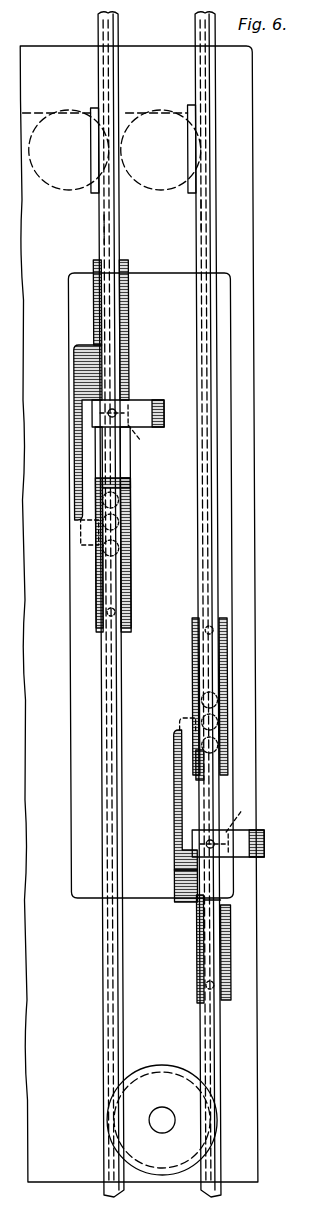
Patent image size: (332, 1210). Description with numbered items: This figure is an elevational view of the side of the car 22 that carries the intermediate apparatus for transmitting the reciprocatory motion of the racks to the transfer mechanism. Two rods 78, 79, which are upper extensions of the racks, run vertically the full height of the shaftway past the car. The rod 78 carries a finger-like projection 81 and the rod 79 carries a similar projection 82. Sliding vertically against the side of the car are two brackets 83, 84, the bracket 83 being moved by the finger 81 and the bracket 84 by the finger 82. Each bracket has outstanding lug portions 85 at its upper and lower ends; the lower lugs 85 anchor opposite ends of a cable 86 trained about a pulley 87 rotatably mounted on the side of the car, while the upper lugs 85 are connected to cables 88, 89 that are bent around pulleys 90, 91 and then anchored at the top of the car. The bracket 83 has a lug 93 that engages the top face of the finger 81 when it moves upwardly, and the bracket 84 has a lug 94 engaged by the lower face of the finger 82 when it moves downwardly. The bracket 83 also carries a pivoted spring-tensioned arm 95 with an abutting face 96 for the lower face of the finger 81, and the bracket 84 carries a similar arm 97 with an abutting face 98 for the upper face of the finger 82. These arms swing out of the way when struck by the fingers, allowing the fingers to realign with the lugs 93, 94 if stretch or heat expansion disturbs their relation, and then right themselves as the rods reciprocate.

The car 22 is at (246, 262).
The rod 78 is at (212, 1160).
The rod 79 is at (110, 1158).
The finger-like projection 81 is at (261, 858).
The projection 82 is at (140, 405).
The bracket 83 is at (228, 938).
The bracket 84 is at (128, 553).
The lug portions 85 is at (124, 262).
The cable 86 is at (203, 1052).
The pulley 87 is at (154, 1076).
The cable 88 is at (207, 214).
The cable 89 is at (103, 226).
The pulley 90 is at (187, 142).
The pulley 91 is at (92, 148).
The lug 93 is at (205, 772).
The lug 94 is at (128, 485).
The spring tensioned arm 95 is at (176, 790).
The abutting face 96 is at (240, 808).
The spring tensioned arm 97 is at (80, 488).
The abutting face 98 is at (143, 427).